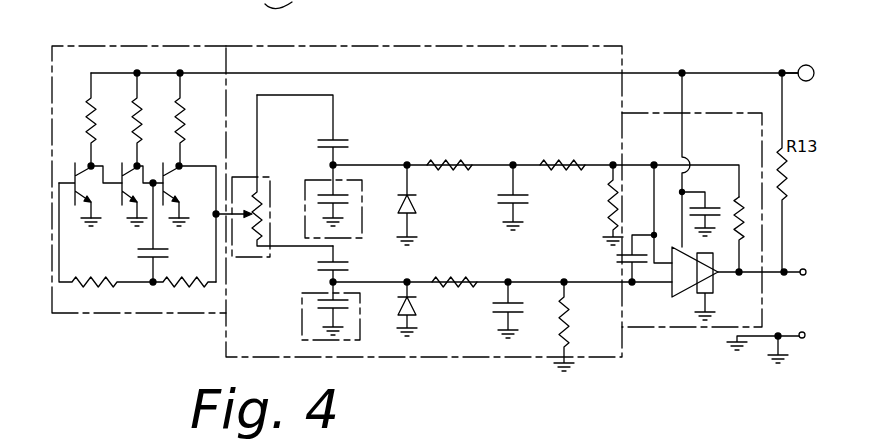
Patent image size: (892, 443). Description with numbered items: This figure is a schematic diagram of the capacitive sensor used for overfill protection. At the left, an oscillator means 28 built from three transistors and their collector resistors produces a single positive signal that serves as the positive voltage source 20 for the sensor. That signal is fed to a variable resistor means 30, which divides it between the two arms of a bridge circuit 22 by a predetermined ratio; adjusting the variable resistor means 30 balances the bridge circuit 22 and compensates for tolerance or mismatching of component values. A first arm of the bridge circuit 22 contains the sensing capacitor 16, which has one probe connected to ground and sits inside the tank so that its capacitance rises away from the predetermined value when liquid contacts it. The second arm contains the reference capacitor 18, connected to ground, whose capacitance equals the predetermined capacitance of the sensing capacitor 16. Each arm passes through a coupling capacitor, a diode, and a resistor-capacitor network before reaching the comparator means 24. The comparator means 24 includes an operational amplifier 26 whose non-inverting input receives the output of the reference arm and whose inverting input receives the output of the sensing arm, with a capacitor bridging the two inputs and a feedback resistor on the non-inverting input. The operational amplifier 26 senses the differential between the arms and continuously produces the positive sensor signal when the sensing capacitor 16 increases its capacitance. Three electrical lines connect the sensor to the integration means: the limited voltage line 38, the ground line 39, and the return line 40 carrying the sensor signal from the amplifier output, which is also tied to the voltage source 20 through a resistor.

The sensing capacitor 16 is at (302, 318).
The reference capacitor 18 is at (362, 203).
The positive voltage source 20 is at (806, 65).
The bridge circuit 22 is at (468, 357).
The comparator means 24 is at (716, 329).
The operational amplifier 26 is at (680, 286).
The oscillator means 28 is at (135, 313).
The variable resistor means 30 is at (270, 177).
The limited voltage line 38 is at (790, 340).
The ground line 39 is at (796, 70).
The return line 40 is at (801, 276).